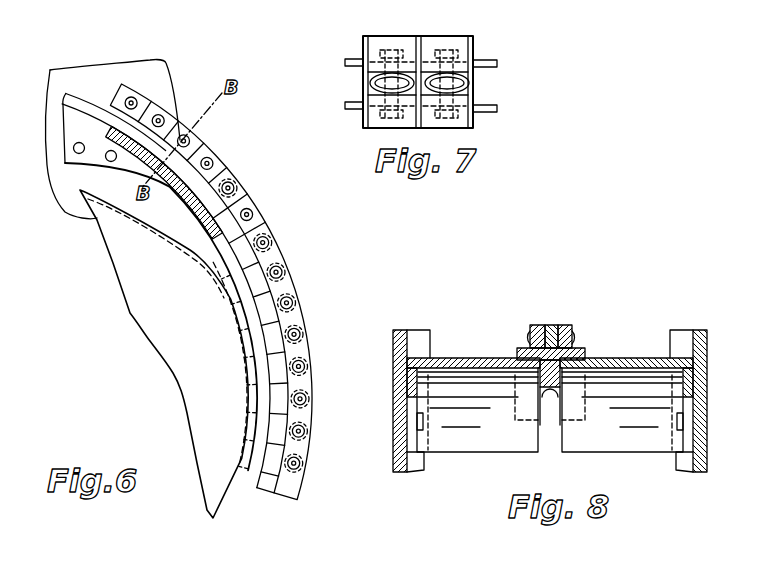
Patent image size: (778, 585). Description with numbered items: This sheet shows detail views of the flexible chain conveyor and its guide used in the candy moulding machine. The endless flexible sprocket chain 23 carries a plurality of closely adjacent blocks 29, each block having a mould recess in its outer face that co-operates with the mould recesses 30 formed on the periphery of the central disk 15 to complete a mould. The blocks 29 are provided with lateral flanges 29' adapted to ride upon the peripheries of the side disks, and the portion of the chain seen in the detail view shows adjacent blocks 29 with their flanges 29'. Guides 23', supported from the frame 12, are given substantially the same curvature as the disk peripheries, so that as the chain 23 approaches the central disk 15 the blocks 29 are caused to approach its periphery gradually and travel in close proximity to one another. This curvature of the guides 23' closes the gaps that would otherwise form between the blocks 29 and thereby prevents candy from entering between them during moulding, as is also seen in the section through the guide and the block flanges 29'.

In FIG. 6, the frame 12 is at (157, 78).
In FIG. 8, the frame 12 is at (413, 338).
In FIG. 6, the central disk 15 is at (168, 354).
In FIG. 6, the endless flexible sprocket chain 23 is at (228, 292).
In FIG. 7, the endless flexible sprocket chain 23 is at (431, 77).
In FIG. 6, the guides 23' is at (166, 283).
In FIG. 8, the guides 23' is at (550, 423).
In FIG. 6, the blocks 29 is at (231, 284).
In FIG. 8, the blocks 29 is at (577, 401).
In FIG. 6, the lateral flanges 29' is at (278, 230).
In FIG. 7, the lateral flanges 29' is at (451, 76).
In FIG. 8, the lateral flanges 29' is at (561, 351).
In FIG. 7, the mould recesses 30 is at (467, 85).